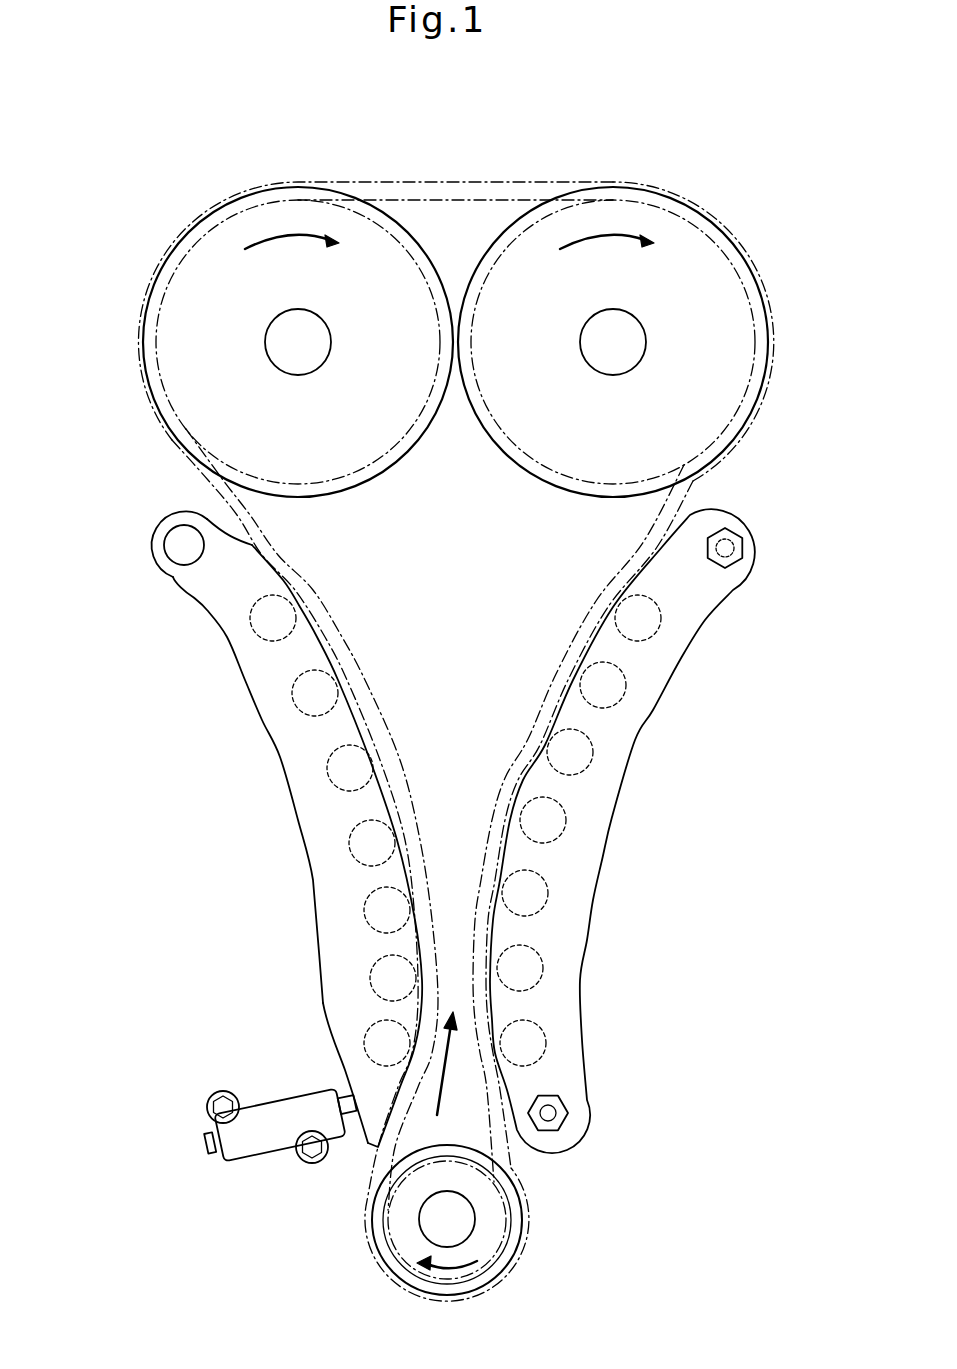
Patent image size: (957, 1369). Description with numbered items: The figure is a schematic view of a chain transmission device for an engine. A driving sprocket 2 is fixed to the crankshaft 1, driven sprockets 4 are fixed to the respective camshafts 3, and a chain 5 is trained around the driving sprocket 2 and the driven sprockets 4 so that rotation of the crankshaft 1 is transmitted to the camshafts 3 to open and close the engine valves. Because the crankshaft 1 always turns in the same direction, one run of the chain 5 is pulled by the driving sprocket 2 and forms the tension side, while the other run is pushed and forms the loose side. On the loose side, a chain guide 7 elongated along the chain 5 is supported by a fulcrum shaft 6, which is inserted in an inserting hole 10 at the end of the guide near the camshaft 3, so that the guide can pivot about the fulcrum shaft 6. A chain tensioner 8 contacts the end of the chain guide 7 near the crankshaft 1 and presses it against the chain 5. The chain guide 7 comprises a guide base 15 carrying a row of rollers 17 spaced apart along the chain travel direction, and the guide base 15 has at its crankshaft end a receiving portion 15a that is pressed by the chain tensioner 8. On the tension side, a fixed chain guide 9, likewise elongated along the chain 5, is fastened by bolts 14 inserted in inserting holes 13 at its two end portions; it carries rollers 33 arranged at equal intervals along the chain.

The crankshaft 1 is at (425, 1220).
The driving sprocket 2 is at (390, 1257).
The camshaft 3 is at (283, 335).
The driven sprocket 4 is at (145, 327).
The chain 5 is at (198, 473).
The fulcrum shaft 6 is at (183, 545).
The chain guide 7 is at (288, 797).
The chain tensioner 8 is at (247, 1148).
The fixed chain guide 9 is at (616, 817).
The inserting hole 10 is at (178, 559).
The inserting holes 13 is at (735, 533).
The bolts 14 is at (745, 546).
The guide base 15 is at (310, 857).
The receiving portion 15a is at (337, 1055).
The rollers 17 is at (368, 973).
The rollers 33 is at (541, 965).